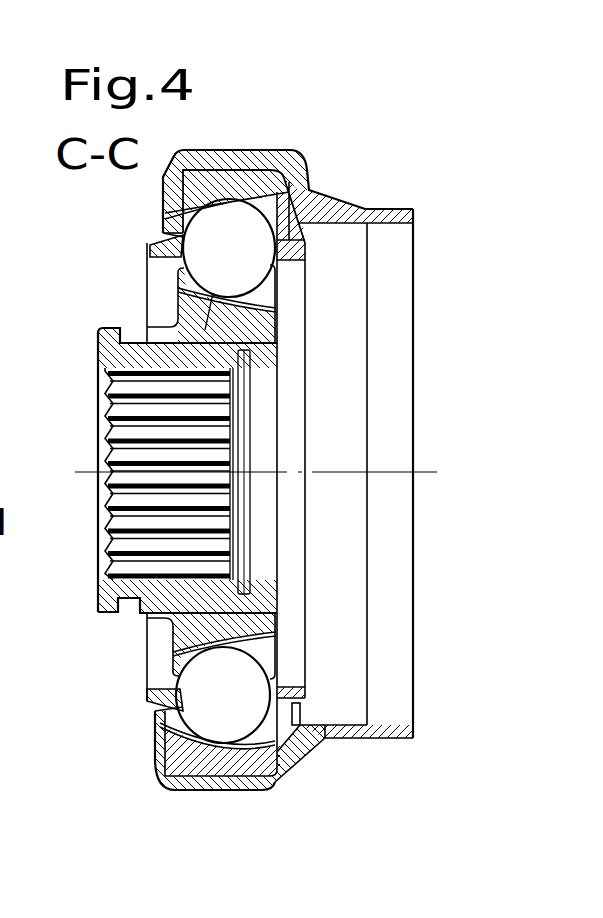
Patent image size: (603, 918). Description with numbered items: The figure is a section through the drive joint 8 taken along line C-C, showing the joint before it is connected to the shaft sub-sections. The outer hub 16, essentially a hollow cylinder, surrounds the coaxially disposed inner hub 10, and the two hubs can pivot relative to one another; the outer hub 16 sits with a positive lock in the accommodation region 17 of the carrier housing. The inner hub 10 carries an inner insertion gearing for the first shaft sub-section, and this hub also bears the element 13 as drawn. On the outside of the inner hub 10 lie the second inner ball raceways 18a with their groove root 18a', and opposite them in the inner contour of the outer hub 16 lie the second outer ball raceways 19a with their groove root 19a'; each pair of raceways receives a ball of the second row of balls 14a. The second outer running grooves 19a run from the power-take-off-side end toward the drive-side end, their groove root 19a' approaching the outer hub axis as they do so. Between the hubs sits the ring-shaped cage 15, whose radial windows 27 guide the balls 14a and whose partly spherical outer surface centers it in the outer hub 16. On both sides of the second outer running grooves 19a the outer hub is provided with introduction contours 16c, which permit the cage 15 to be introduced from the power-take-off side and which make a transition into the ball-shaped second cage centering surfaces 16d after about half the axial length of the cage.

The drive joint 8 is at (527, 845).
The inner hub 10 is at (255, 345).
The hub with internal toothing 13 is at (110, 337).
The second row of balls 14a is at (228, 225).
The ring-shaped cage 15 is at (168, 247).
The outer hub 16 is at (202, 183).
The introduction contours 16c is at (318, 220).
The second cage centering surfaces 16d is at (150, 226).
The accommodation region 17 is at (233, 780).
The second inner ball raceways 18a is at (352, 452).
The groove root of the second inner ball raceways 18a' is at (389, 304).
The second outer ball raceways 19a is at (413, 408).
The groove root of the second outer ball raceways 19a' is at (278, 420).
The radial windows 27 is at (308, 708).